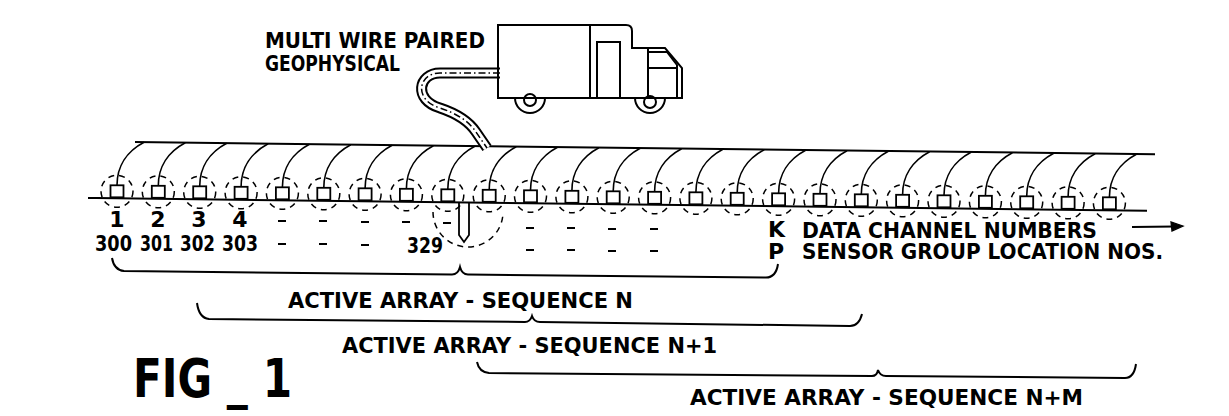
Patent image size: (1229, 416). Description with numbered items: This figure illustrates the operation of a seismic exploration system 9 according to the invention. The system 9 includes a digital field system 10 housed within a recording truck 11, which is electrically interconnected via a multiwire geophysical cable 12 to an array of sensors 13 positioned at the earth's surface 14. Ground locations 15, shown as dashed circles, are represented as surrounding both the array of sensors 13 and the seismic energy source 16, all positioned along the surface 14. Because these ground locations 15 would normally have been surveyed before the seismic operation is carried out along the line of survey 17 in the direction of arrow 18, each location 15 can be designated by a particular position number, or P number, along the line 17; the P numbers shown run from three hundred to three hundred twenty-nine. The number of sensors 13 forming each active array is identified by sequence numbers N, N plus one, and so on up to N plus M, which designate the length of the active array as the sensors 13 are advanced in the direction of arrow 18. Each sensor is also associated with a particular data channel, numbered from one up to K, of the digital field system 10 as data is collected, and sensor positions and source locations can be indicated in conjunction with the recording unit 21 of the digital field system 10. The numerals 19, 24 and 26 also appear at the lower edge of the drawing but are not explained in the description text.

The seismic exploration system 9 is at (638, 69).
The digital field system 10 is at (615, 80).
The recording truck 11 is at (672, 58).
The multiwire geophysical cable 12 is at (413, 92).
The array of sensors 13 is at (856, 194).
The earth's surface 14 is at (88, 196).
The ground locations 15 is at (111, 168).
The seismic energy source 16 is at (472, 247).
The line of survey 17 is at (1156, 197).
The arrow 18 is at (1150, 232).
The label 19 is at (500, 411).
The recording unit 21 is at (738, 411).
The label 24 is at (637, 415).
The label 26 is at (823, 411).